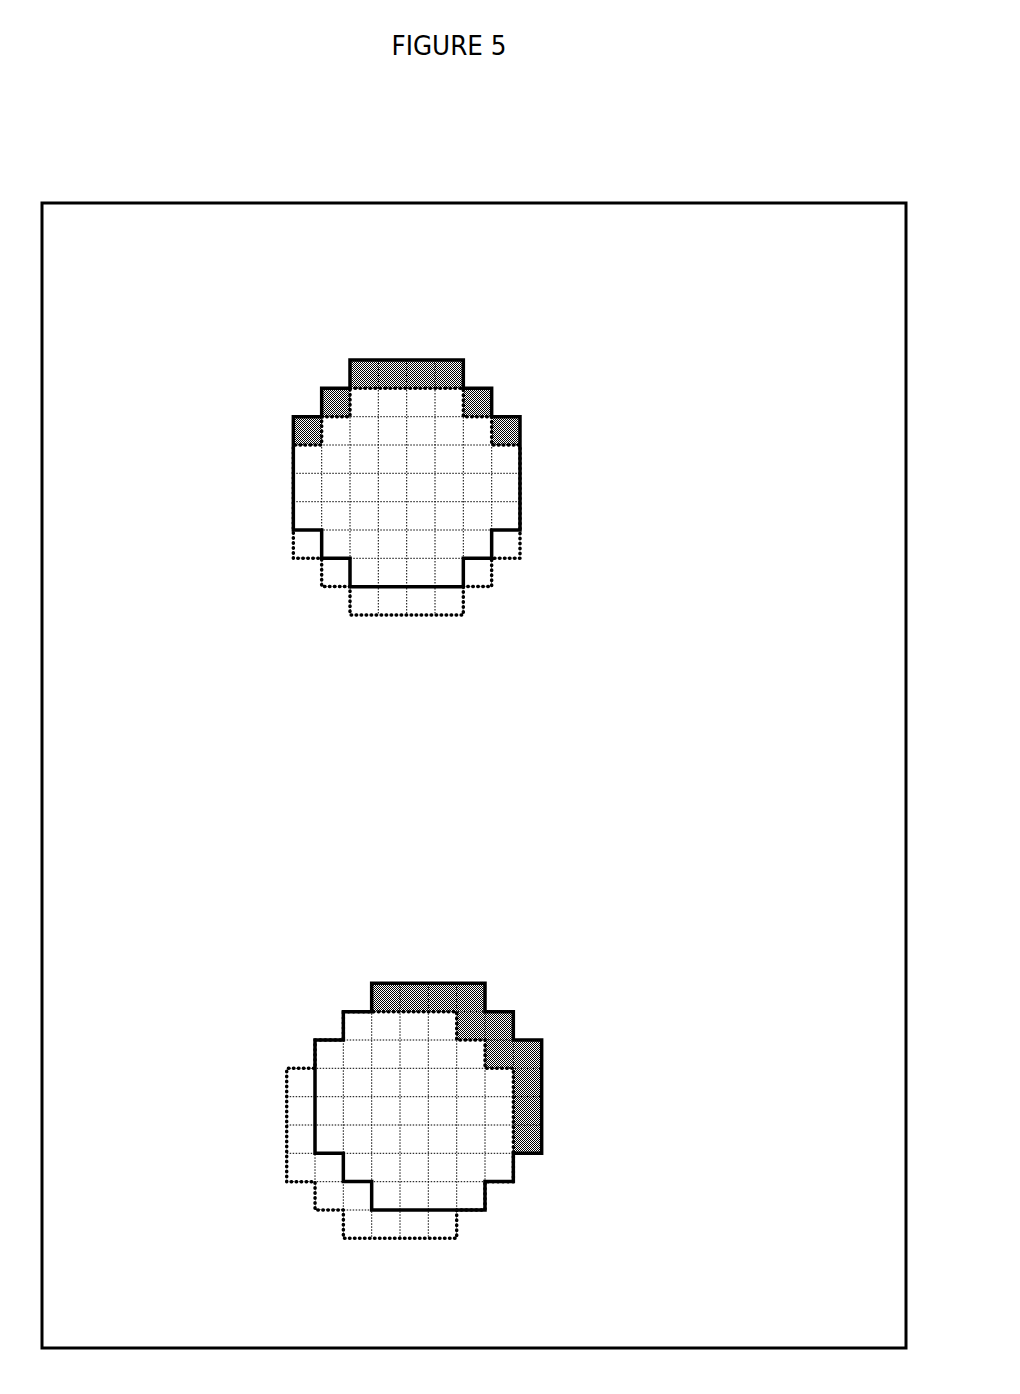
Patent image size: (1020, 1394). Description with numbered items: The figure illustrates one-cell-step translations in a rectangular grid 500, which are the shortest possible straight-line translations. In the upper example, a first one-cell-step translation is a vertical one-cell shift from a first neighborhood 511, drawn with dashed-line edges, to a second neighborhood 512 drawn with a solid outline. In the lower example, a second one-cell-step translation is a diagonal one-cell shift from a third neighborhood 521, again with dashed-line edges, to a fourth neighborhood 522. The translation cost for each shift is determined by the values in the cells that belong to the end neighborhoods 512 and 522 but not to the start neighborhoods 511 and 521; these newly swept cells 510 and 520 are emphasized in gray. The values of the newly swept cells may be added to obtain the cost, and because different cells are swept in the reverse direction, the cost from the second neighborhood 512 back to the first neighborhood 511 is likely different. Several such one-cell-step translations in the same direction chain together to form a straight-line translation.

The grid 500 is at (424, 190).
The newly swept cells 510 is at (467, 373).
The first neighborhood 511 is at (362, 615).
The second neighborhood 512 is at (450, 357).
The newly swept cells 520 is at (530, 1082).
The third neighborhood 521 is at (293, 1180).
The fourth neighborhood 522 is at (525, 1038).